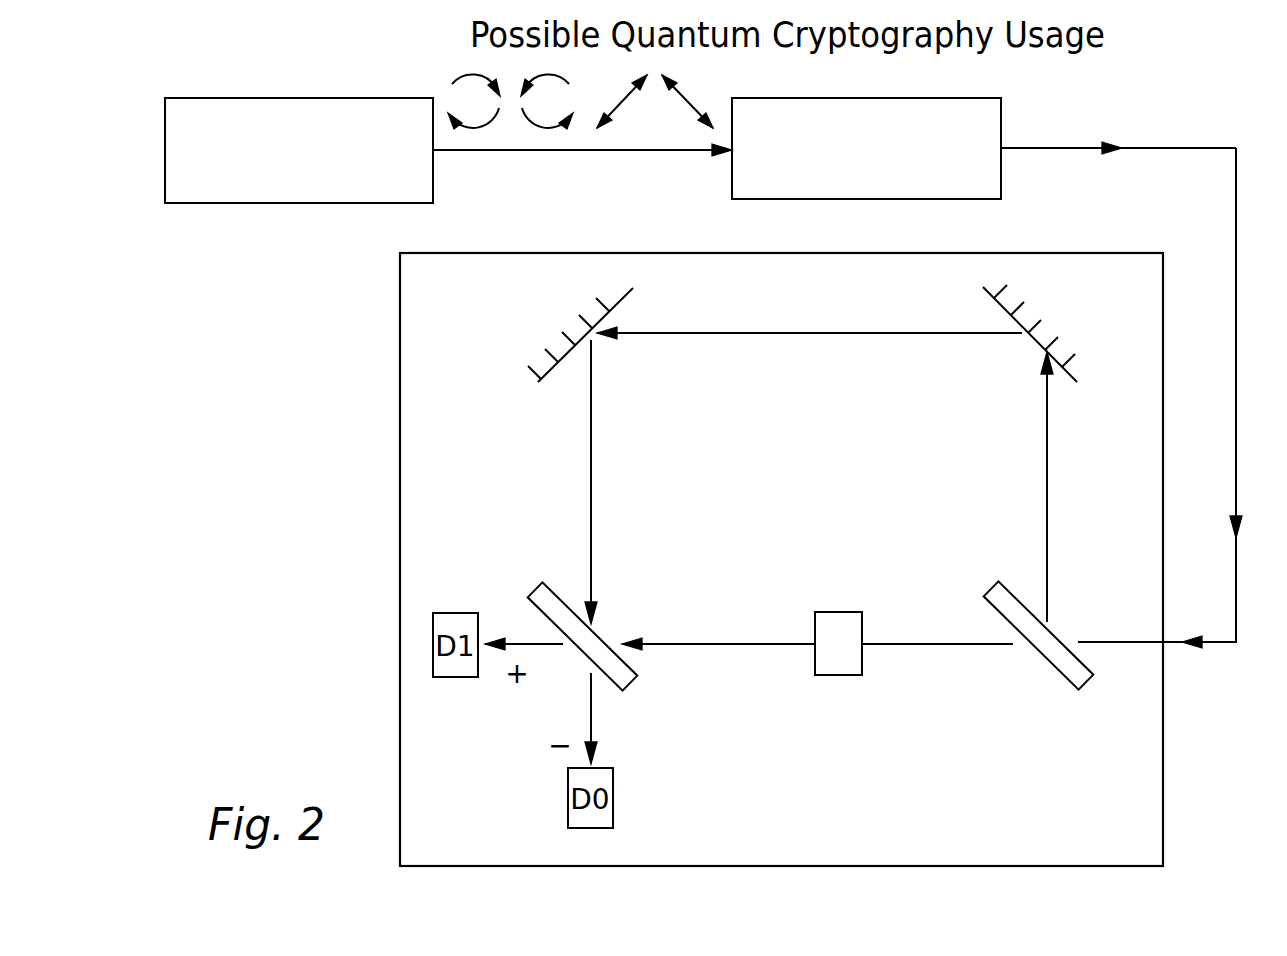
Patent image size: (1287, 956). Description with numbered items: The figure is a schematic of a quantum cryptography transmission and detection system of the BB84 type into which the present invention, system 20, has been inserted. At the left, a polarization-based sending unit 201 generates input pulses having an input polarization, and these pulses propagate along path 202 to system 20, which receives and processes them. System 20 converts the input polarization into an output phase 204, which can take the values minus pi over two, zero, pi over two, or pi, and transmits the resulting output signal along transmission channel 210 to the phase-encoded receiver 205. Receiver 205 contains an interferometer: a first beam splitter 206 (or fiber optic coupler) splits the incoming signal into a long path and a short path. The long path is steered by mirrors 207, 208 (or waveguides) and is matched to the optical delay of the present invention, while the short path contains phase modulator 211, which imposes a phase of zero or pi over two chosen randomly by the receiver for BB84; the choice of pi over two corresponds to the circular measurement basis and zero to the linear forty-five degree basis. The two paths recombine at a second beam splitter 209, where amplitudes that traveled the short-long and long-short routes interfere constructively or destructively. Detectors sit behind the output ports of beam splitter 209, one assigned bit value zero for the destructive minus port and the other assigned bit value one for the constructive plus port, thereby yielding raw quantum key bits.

The sending unit 201 is at (302, 98).
The path 202 is at (680, 150).
The system 20 is at (973, 199).
The output phase 204 is at (1225, 150).
The receiver 205 is at (1163, 800).
The beam splitter 206 is at (1065, 686).
The mirror 207 is at (1035, 318).
The mirror 208 is at (533, 360).
The beam splitter 209 is at (635, 683).
The transmission channel 210 is at (1236, 642).
The phase modulator 211 is at (862, 668).